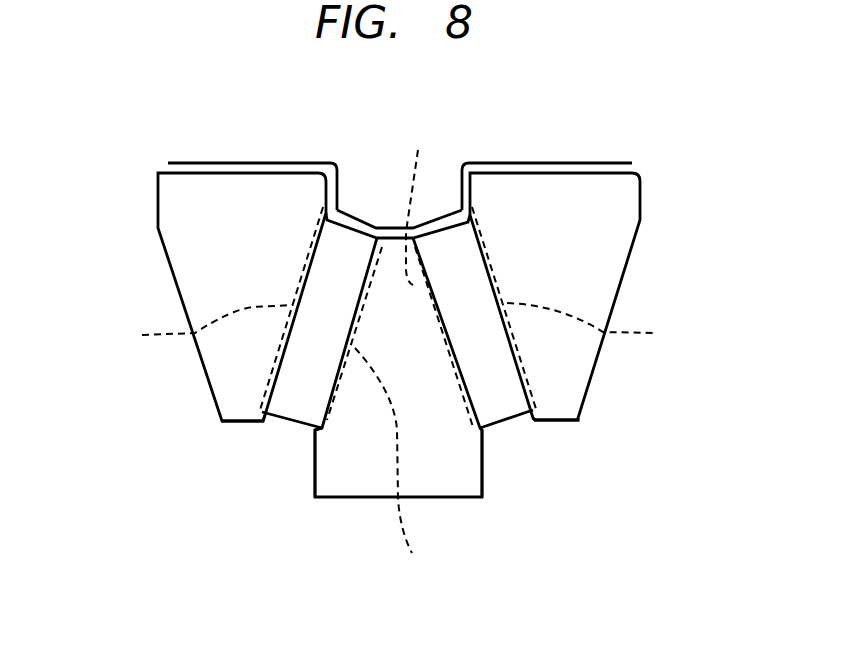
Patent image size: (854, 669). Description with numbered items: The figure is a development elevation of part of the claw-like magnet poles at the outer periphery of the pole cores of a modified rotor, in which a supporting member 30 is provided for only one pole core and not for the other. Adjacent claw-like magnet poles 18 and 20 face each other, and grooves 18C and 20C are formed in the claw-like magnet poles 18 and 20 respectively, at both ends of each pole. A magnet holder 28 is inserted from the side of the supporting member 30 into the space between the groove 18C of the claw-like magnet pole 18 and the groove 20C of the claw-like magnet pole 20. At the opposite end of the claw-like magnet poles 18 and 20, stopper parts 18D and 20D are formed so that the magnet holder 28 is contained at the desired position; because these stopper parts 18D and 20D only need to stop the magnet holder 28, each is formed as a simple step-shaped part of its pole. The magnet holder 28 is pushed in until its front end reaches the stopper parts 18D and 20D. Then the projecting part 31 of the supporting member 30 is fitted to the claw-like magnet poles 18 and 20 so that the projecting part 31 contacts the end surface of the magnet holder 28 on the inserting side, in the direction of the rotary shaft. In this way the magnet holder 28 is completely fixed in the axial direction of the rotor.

The claw-like magnet pole 18 is at (198, 207).
The groove 18C is at (398, 325).
The stopper part 18D is at (262, 415).
The claw-like magnet pole 20 is at (368, 473).
The groove 20C is at (398, 353).
The stopper part 20D is at (323, 440).
The magnet holder 28 is at (295, 405).
The supporting member 30 is at (231, 163).
The projecting part 31 is at (368, 223).